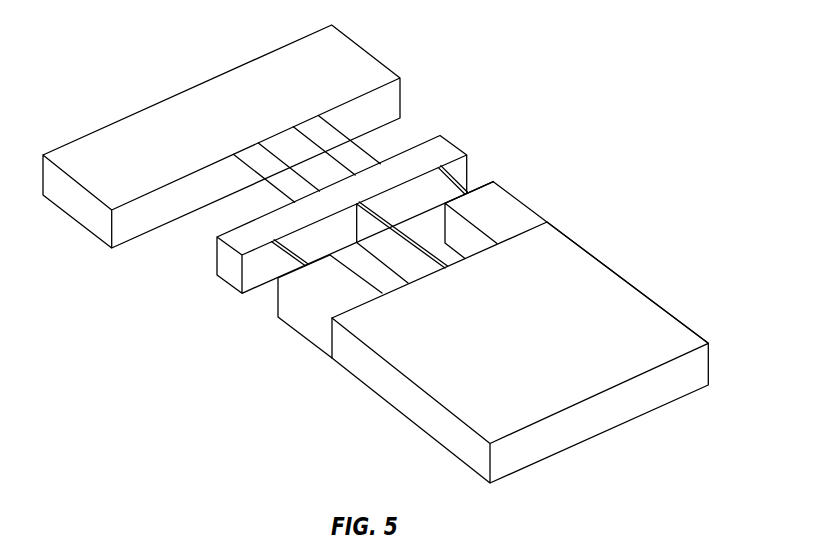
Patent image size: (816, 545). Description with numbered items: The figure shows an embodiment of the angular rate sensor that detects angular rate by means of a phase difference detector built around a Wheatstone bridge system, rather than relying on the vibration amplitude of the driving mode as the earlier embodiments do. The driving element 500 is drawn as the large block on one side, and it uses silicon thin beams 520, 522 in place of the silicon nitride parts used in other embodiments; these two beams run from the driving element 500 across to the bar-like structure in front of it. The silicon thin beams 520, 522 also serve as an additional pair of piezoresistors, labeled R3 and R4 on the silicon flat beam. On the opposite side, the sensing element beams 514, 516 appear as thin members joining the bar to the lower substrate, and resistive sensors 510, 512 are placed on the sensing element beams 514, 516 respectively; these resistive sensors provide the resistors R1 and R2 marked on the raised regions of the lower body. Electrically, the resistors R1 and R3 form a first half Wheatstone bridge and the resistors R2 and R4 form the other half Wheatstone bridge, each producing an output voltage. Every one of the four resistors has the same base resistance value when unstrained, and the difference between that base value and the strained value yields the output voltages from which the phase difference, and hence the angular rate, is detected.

The driving element 500 is at (253, 169).
The resistive sensor 510 is at (357, 304).
The resistive sensor 512 is at (522, 203).
The sensing element beam 514 is at (282, 253).
The sensing element beam 516 is at (457, 184).
The silicon thin beam 520 is at (277, 157).
The silicon thin beam 522 is at (305, 137).
The resistor R1 is at (330, 306).
The resistor R2 is at (476, 220).
The piezoresistor R3 is at (231, 138).
The piezoresistor R4 is at (284, 113).